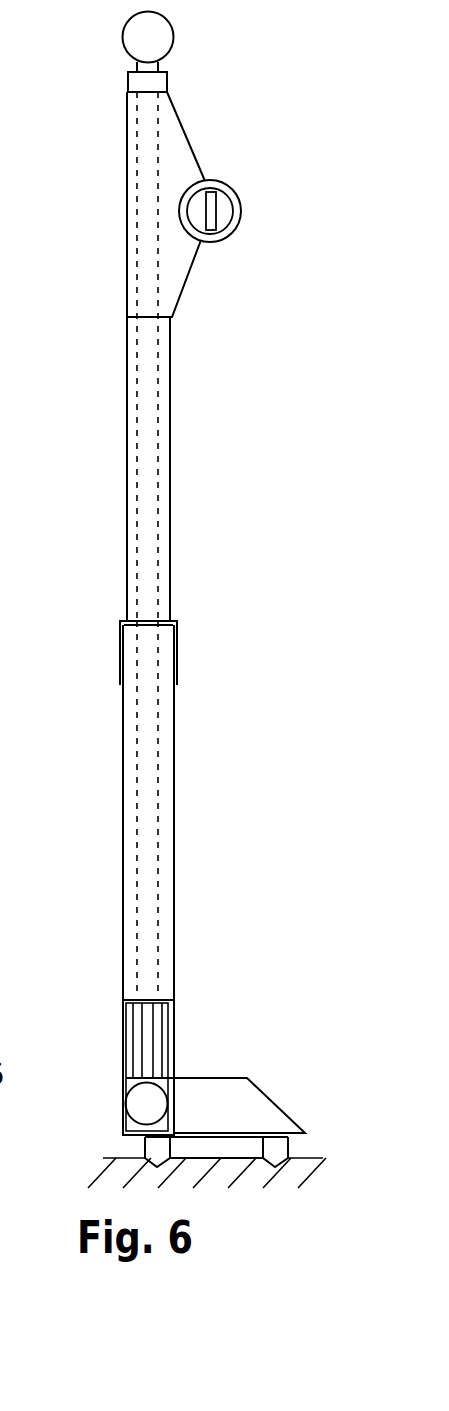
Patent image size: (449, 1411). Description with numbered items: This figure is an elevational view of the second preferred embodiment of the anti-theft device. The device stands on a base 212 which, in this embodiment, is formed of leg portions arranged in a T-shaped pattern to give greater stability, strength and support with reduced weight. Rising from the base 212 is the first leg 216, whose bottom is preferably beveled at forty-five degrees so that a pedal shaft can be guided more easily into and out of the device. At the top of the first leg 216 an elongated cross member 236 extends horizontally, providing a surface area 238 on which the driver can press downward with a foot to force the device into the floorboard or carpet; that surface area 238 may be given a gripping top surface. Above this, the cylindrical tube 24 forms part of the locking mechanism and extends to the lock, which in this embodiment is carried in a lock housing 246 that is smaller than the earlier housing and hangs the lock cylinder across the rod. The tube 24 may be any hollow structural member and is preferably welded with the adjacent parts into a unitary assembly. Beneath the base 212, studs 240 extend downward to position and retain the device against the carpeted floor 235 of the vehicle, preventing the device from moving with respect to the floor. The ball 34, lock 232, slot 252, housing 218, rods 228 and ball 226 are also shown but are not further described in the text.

The ball handle 34 is at (150, 38).
The cylindrical tube 24 is at (172, 454).
The lock housing 246 is at (180, 273).
The lock assembly 232 is at (214, 178).
The key slot 252 is at (223, 203).
The surface area 238 is at (150, 618).
The elongated cross member 236 is at (177, 668).
The first leg 216 is at (165, 763).
The housing 218 is at (174, 1013).
The spring rods 228 is at (147, 1045).
The ball 226 is at (140, 1102).
The base 212 is at (242, 1069).
The studs 240 is at (147, 1148).
The carpeted floor 235 is at (302, 1170).